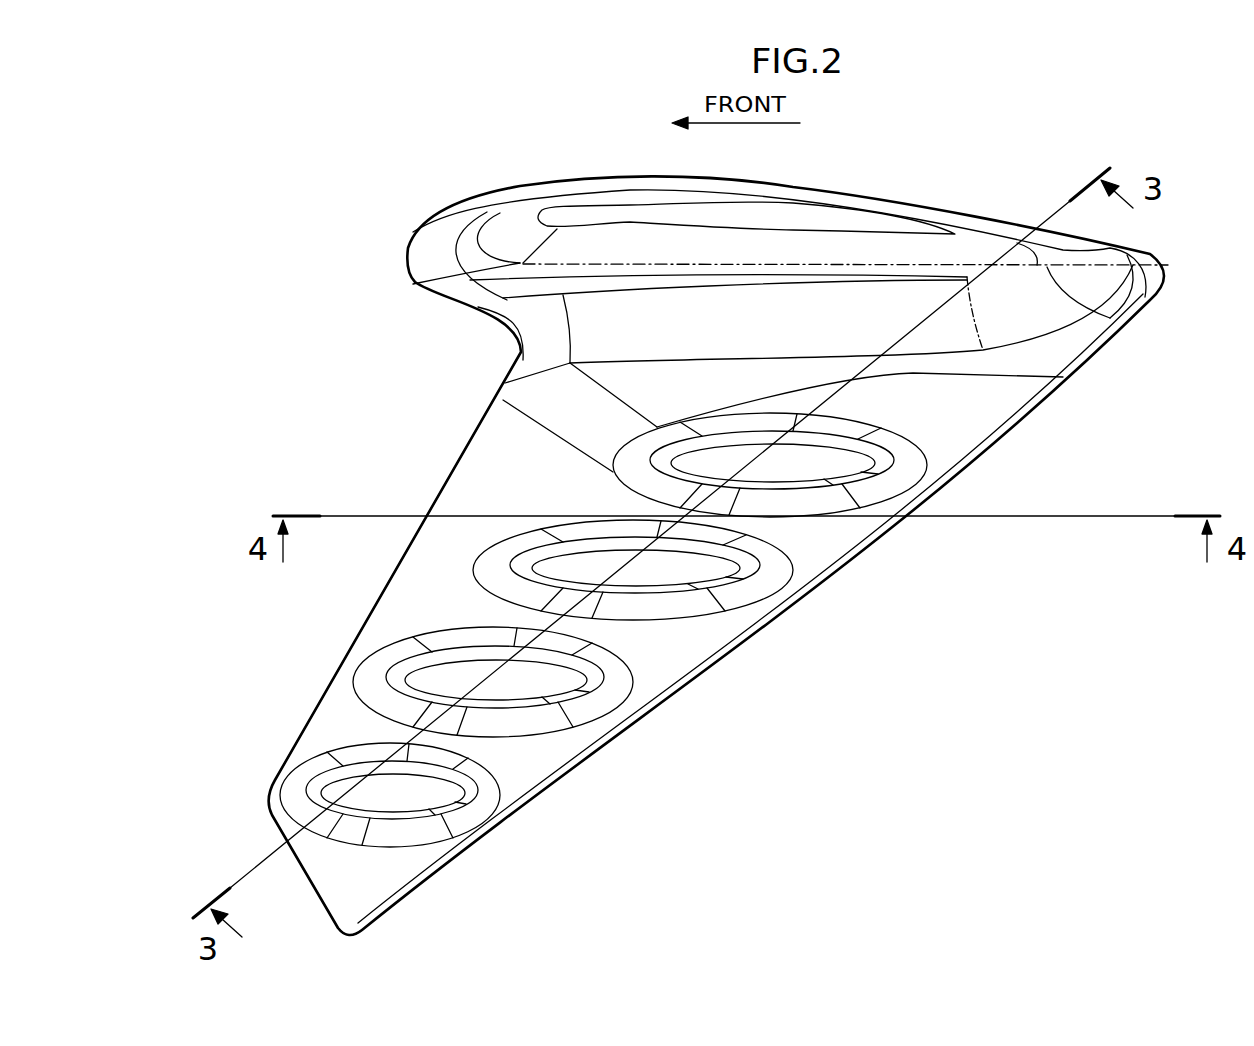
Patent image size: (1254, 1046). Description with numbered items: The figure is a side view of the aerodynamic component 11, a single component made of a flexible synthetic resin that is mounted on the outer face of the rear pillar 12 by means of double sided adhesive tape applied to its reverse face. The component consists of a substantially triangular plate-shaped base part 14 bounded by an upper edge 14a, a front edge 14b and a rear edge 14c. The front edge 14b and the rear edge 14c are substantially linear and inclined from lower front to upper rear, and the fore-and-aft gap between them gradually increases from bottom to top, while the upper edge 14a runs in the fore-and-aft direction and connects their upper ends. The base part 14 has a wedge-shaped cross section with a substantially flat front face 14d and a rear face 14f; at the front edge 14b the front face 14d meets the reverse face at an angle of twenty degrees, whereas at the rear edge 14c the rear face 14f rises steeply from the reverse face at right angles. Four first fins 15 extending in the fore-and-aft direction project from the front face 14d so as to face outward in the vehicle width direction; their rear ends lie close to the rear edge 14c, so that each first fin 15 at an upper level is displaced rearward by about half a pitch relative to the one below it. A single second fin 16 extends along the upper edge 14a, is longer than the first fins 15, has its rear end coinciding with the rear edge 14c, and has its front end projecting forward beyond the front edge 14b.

The aerodynamic component 11 is at (390, 390).
The rear pillar 12 is at (352, 448).
The base part 14 is at (428, 497).
The upper edge 14a is at (737, 262).
The front edge 14b is at (383, 590).
The rear edge 14c is at (773, 622).
The front face 14d is at (590, 488).
The rear face 14f is at (673, 692).
The first fin 15 is at (807, 450).
The second fin 16 is at (840, 222).